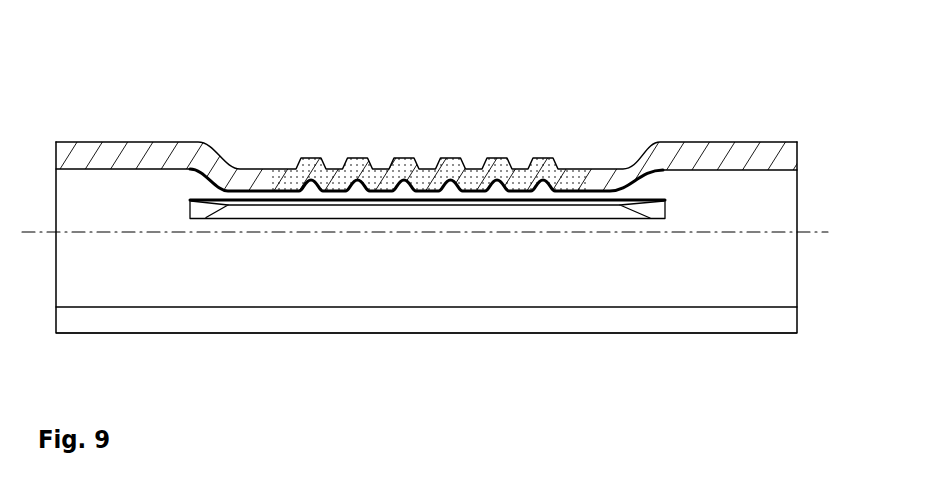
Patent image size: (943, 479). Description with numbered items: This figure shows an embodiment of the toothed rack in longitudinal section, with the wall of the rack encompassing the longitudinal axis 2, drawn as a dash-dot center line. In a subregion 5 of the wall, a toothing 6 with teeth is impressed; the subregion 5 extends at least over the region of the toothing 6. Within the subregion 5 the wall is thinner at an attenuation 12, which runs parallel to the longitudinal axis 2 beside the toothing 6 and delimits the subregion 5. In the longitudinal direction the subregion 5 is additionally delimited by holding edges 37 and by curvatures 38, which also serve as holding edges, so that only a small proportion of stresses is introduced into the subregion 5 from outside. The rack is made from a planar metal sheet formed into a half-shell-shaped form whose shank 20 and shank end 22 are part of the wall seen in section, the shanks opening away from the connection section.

The longitudinal axis 2 is at (130, 235).
The subregion 5 is at (367, 203).
The toothing 6 is at (437, 118).
The attenuation 12 is at (512, 213).
The shank 20 is at (618, 277).
The shank end 22 is at (355, 323).
The holding edge 37 is at (273, 167).
The curvature 38 is at (235, 148).